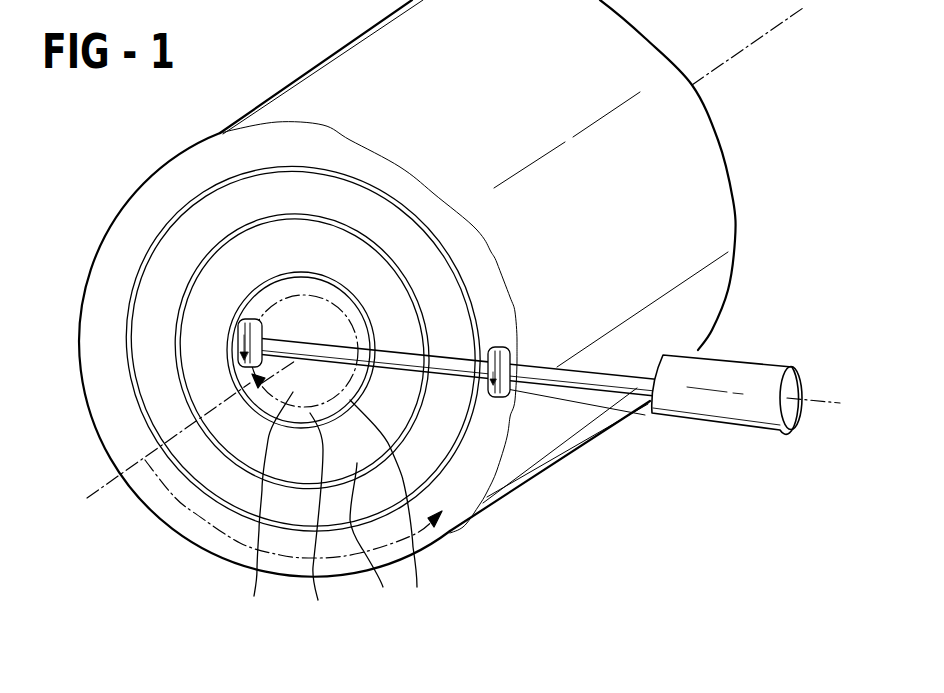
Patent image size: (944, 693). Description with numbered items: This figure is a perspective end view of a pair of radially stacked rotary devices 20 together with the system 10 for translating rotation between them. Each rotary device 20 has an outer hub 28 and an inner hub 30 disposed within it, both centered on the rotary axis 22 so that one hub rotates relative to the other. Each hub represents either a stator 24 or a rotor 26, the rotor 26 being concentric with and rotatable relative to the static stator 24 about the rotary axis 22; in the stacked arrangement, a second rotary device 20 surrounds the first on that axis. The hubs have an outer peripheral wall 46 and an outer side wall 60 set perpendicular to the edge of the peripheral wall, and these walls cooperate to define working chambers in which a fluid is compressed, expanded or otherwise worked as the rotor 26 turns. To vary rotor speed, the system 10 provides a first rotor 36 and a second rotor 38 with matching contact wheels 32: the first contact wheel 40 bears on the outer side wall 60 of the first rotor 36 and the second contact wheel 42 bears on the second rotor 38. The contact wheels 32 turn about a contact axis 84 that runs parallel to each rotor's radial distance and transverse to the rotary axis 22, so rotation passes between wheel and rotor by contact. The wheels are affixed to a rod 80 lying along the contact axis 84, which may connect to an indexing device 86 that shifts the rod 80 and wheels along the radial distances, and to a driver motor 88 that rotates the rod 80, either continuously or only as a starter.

The system 10 is at (633, 417).
The rotary device 20 is at (305, 272).
The rotary axis 22 is at (103, 488).
The stator 24 is at (203, 323).
The rotor 26 is at (232, 383).
The outer hub 28 is at (233, 488).
The inner hub 30 is at (222, 420).
The contact wheel 32 is at (500, 345).
The first rotor 36 is at (460, 487).
The second rotor 38 is at (319, 519).
The first contact wheel 40 is at (507, 388).
The second contact wheel 42 is at (262, 318).
The outer peripheral wall 46 is at (693, 143).
The outer side wall 60 is at (340, 570).
The rod 80 is at (590, 378).
The contact axis 84 is at (826, 396).
The indexing device 86 is at (757, 410).
The driver motor 88 is at (720, 410).